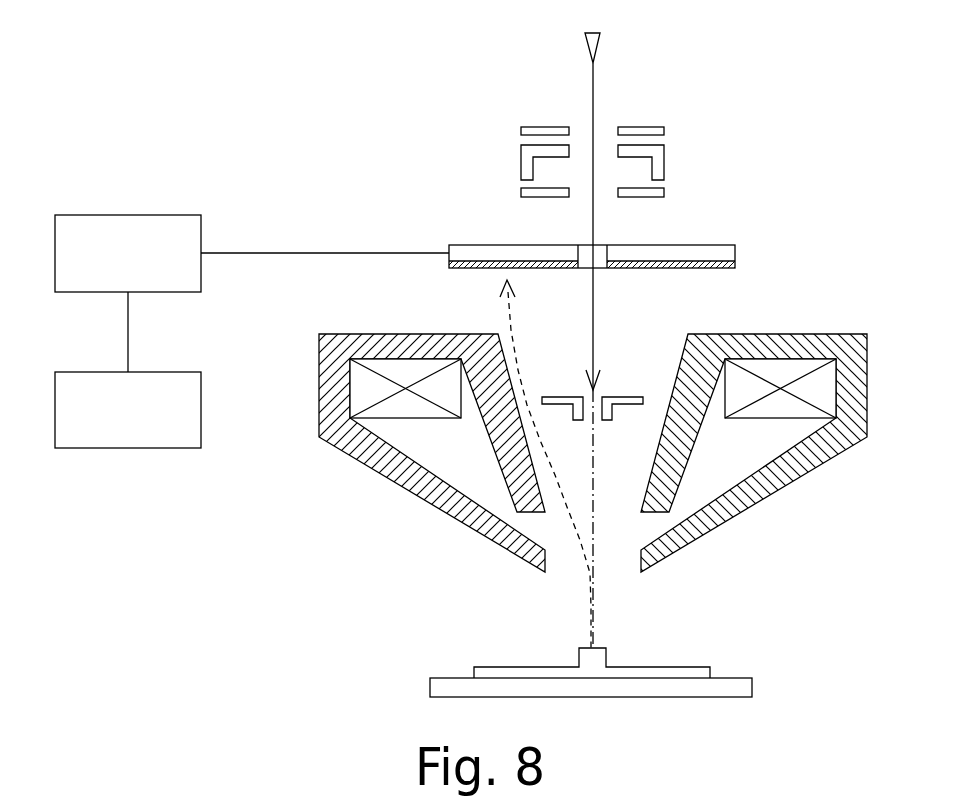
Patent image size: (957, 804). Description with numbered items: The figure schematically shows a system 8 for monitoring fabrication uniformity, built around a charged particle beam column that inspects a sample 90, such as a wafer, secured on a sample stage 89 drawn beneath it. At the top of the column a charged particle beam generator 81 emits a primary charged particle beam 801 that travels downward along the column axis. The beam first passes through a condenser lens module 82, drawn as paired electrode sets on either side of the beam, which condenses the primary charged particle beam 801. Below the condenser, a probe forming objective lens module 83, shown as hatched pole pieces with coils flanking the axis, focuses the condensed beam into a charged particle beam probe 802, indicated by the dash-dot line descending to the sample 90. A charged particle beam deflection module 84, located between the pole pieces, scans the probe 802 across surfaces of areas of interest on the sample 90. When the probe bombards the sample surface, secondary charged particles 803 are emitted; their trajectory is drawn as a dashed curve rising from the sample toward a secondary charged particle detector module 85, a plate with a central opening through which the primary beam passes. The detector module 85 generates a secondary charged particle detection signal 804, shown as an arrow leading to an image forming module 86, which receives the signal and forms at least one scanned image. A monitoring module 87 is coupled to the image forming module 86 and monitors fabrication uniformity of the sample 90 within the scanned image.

The system for monitoring fabrication uniformity 8 is at (108, 100).
The charged particle beam generator 81 is at (683, 33).
The condenser lens module 82 is at (664, 167).
The probe forming objective lens module 83 is at (865, 368).
The charged particle beam deflection module 84 is at (632, 394).
The secondary charged particle detector module 85 is at (735, 252).
The image forming module 86 is at (144, 269).
The monitoring module 87 is at (144, 425).
The sample stage 89 is at (752, 688).
The sample 90 is at (710, 670).
The primary charged particle beam 801 is at (594, 227).
The charged particle beam probe 802 is at (595, 572).
The secondary charged particles 803 is at (503, 322).
The secondary charged particle detection signal 804 is at (253, 238).